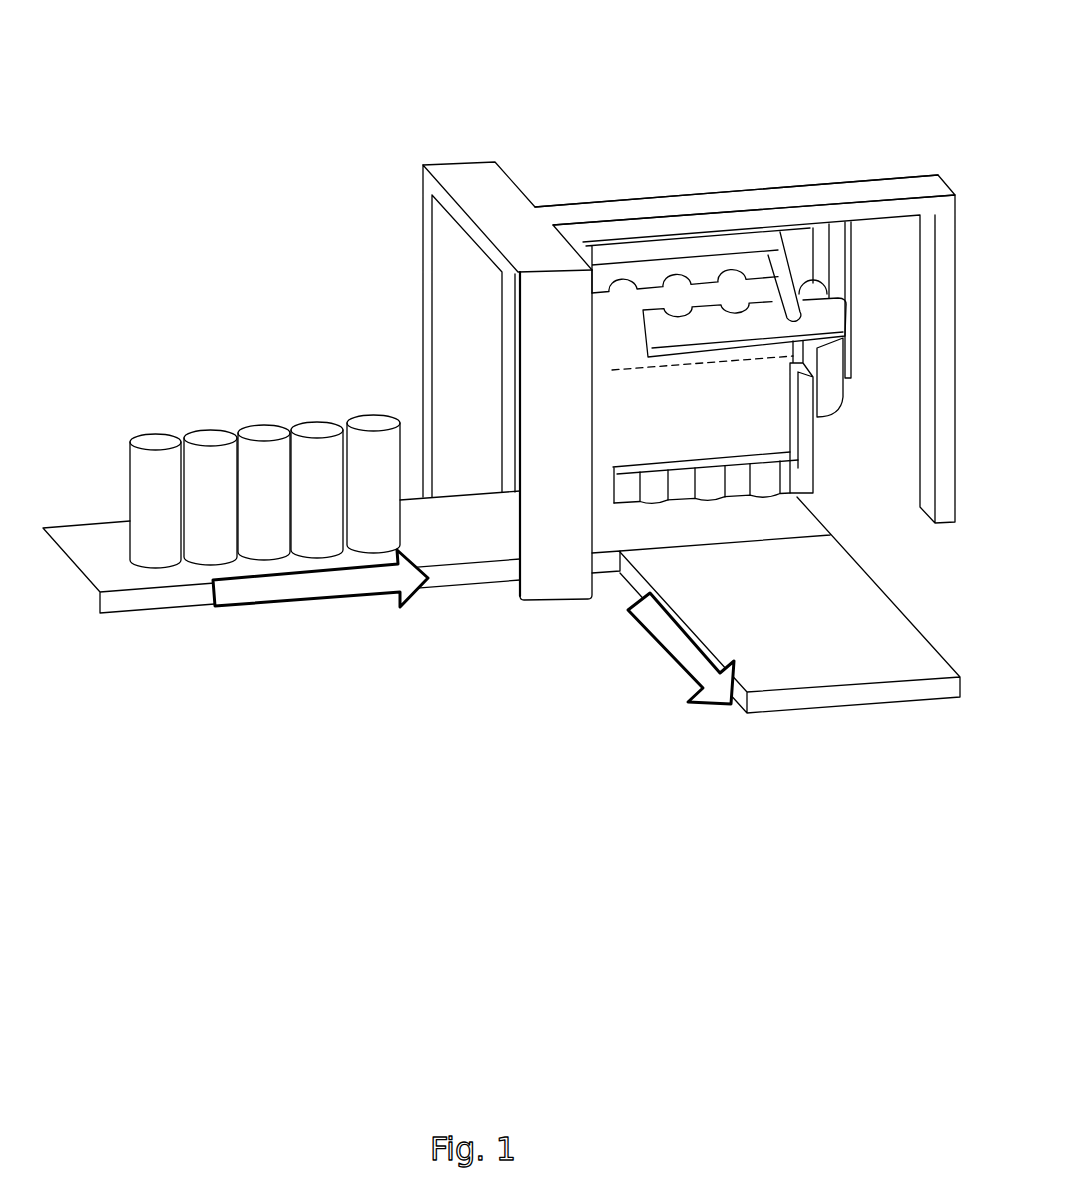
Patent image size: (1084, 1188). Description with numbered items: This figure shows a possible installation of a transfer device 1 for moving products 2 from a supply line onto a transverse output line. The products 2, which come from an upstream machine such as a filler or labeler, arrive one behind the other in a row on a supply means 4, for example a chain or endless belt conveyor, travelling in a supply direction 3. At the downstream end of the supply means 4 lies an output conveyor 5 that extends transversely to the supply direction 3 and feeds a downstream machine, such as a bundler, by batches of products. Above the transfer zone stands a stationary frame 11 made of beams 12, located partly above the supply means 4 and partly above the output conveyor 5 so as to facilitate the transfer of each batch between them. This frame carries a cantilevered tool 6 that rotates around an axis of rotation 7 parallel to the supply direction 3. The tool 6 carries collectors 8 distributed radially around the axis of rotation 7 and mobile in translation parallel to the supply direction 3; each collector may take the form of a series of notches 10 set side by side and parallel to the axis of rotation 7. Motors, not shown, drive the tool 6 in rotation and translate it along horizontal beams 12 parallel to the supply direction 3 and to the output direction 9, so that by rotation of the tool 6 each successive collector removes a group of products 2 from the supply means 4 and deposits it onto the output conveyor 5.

The transfer device 1 is at (522, 88).
The products 2 is at (215, 485).
The supply direction 3 is at (332, 580).
The supply means 4 is at (329, 308).
The output conveyor 5 is at (828, 653).
The tool 6 is at (793, 243).
The axis of rotation 7 is at (627, 362).
The collectors 8 is at (730, 250).
The output direction 9 is at (683, 648).
The notches 10 is at (685, 312).
The stationary frame 11 is at (425, 130).
The beams 12 is at (455, 272).